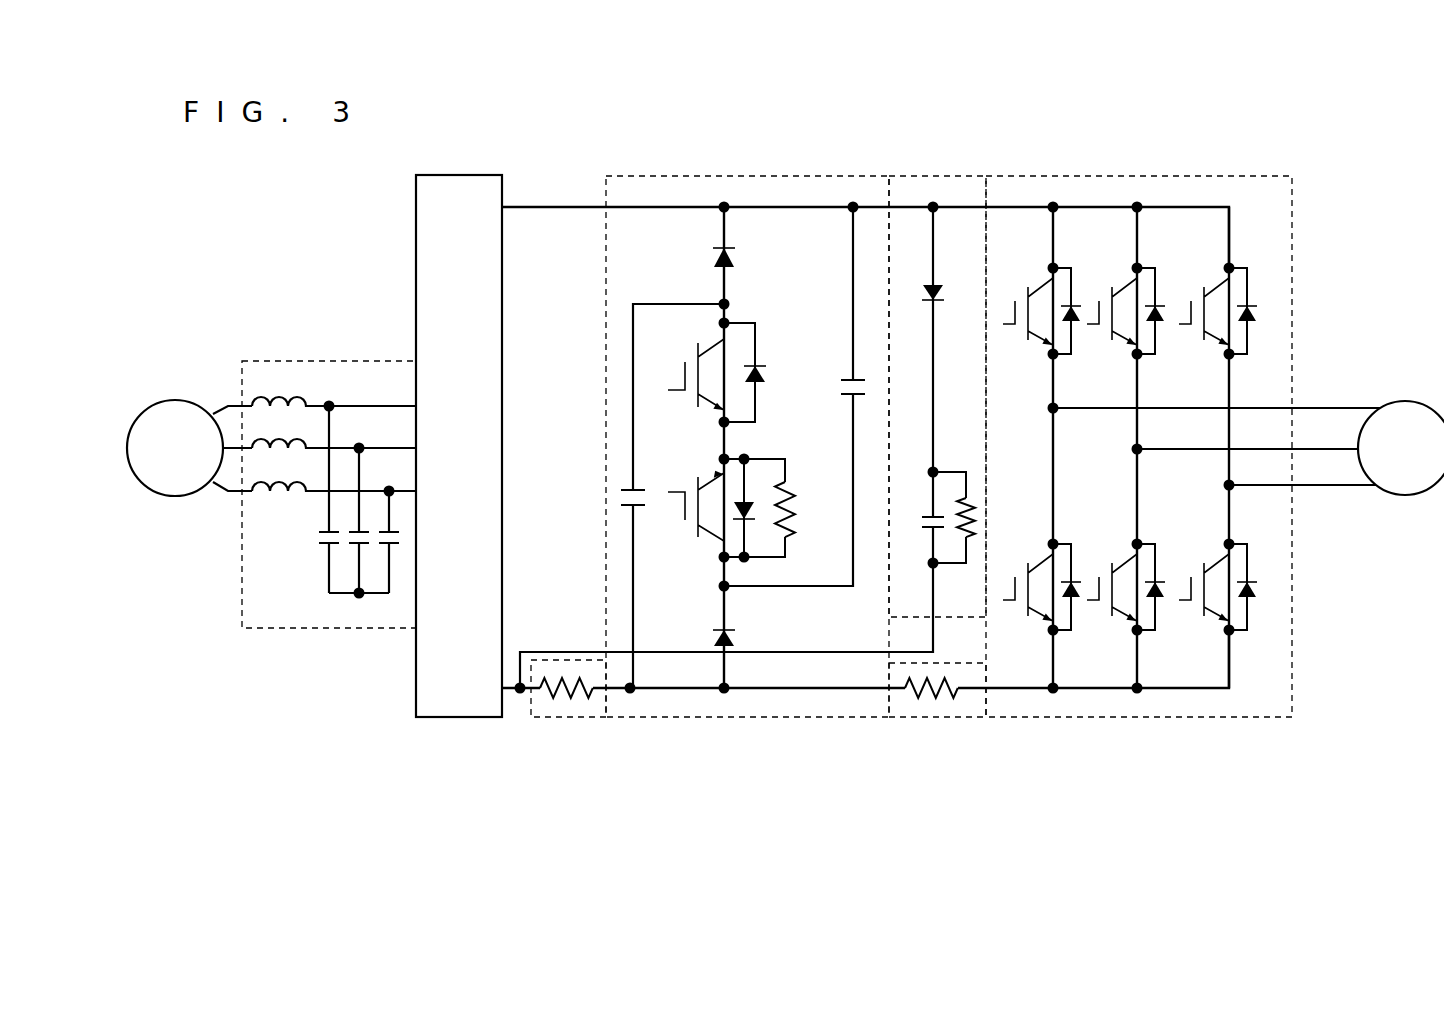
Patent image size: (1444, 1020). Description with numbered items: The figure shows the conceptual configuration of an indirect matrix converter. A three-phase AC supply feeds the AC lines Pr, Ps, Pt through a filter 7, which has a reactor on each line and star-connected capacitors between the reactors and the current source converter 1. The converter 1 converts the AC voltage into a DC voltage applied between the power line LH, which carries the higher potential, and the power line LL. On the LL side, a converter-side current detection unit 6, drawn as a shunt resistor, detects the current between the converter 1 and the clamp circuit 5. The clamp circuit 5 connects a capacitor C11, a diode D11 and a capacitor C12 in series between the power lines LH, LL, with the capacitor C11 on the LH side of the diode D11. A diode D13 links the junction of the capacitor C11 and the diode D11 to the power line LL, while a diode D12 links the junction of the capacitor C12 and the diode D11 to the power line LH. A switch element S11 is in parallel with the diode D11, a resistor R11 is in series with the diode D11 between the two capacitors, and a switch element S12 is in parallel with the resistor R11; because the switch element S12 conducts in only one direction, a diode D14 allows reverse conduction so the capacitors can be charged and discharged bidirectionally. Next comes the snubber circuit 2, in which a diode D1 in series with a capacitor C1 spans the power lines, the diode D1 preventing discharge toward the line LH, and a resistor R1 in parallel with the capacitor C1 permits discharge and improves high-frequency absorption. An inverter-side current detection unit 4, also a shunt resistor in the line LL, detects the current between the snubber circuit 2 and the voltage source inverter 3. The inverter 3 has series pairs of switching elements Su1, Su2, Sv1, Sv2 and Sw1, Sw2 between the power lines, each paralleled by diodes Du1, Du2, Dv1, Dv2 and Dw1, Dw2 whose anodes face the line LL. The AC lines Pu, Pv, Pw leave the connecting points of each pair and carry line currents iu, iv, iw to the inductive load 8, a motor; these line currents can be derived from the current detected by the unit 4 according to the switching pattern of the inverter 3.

The current source converter 1 is at (483, 172).
The snubber circuit 2 is at (905, 177).
The voltage source inverter 3 is at (1142, 177).
The inverter-side current detection unit 4 is at (937, 718).
The clamp circuit 5 is at (747, 177).
The converter-side current detection unit 6 is at (558, 720).
The filter 7 is at (332, 375).
The inductive load 8 is at (1404, 400).
The power line LH is at (805, 207).
The power line LL is at (810, 688).
The AC line Pr is at (362, 406).
The AC line Ps is at (368, 448).
The AC line Pt is at (366, 491).
The AC line Pu is at (1085, 412).
The AC line Pv is at (1178, 452).
The AC line Pw is at (1265, 488).
The line current iu is at (1331, 407).
The line current iv is at (1331, 446).
The line current iw is at (1331, 500).
The switch element S11 is at (687, 371).
The switch element S12 is at (688, 506).
The diode D11 is at (764, 372).
The diode D12 is at (712, 256).
The diode D13 is at (736, 634).
The diode D14 is at (756, 507).
The capacitor C11 is at (834, 372).
The capacitor C12 is at (622, 498).
The resistor R11 is at (780, 508).
The diode D1 is at (948, 289).
The capacitor C1 is at (930, 508).
The resistor R1 is at (975, 512).
The switching element Su1 is at (1040, 318).
The switching element Sv1 is at (1124, 318).
The switching element Sw1 is at (1216, 318).
The switching element Su2 is at (1040, 582).
The switching element Sv2 is at (1124, 582).
The switching element Sw2 is at (1216, 582).
The diode Du1 is at (1075, 302).
The diode Dv1 is at (1159, 302).
The diode Dw1 is at (1251, 302).
The diode Du2 is at (1075, 600).
The diode Dv2 is at (1159, 600).
The diode Dw2 is at (1251, 600).